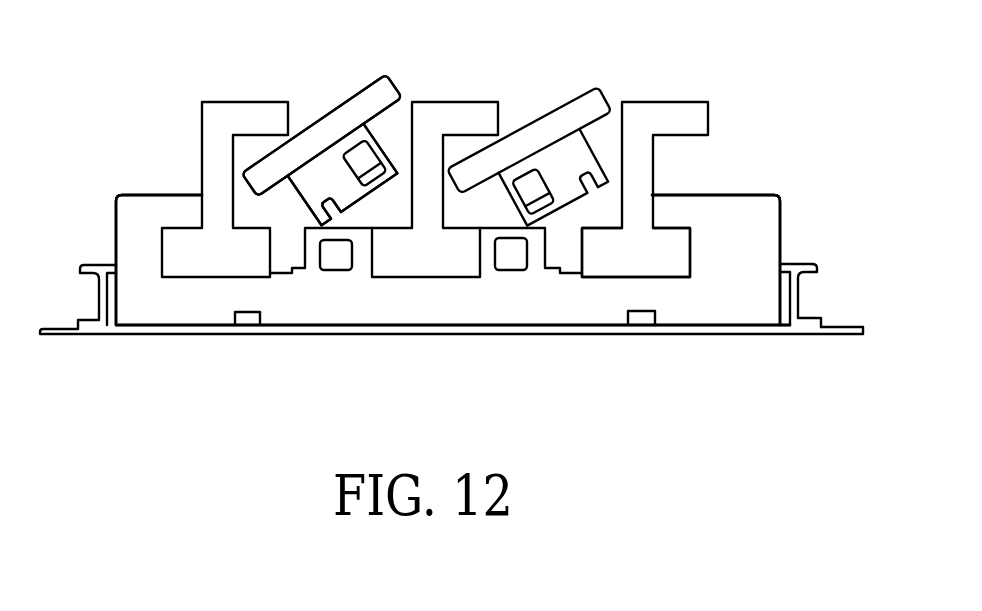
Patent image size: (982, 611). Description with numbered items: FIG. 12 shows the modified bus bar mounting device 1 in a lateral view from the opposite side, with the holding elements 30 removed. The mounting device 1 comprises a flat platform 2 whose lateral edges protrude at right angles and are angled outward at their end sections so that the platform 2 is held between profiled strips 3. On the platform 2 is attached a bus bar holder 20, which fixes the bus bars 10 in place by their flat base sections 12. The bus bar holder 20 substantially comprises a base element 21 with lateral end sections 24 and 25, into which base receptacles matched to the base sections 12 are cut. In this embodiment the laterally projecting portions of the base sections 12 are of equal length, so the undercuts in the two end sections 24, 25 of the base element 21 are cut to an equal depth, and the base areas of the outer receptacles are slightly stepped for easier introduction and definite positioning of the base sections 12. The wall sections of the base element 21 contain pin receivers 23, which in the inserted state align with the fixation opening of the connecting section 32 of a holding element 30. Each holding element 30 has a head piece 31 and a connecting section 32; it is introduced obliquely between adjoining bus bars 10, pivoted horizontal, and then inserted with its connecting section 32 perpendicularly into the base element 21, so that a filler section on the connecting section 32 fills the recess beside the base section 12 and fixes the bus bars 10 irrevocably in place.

The mounting device 1 is at (110, 238).
The platform 2 is at (437, 327).
The profiled strips 3 is at (78, 322).
The bus bar 10 is at (483, 90).
The base section 12 is at (597, 258).
The bus bar holder 20 is at (118, 208).
The base element 21 is at (177, 312).
The pin receivers 23 is at (333, 258).
The end section 24 is at (160, 203).
The end section 25 is at (733, 204).
The holding element 30 is at (332, 112).
The head piece 31 is at (387, 92).
The connecting section 32 is at (306, 190).